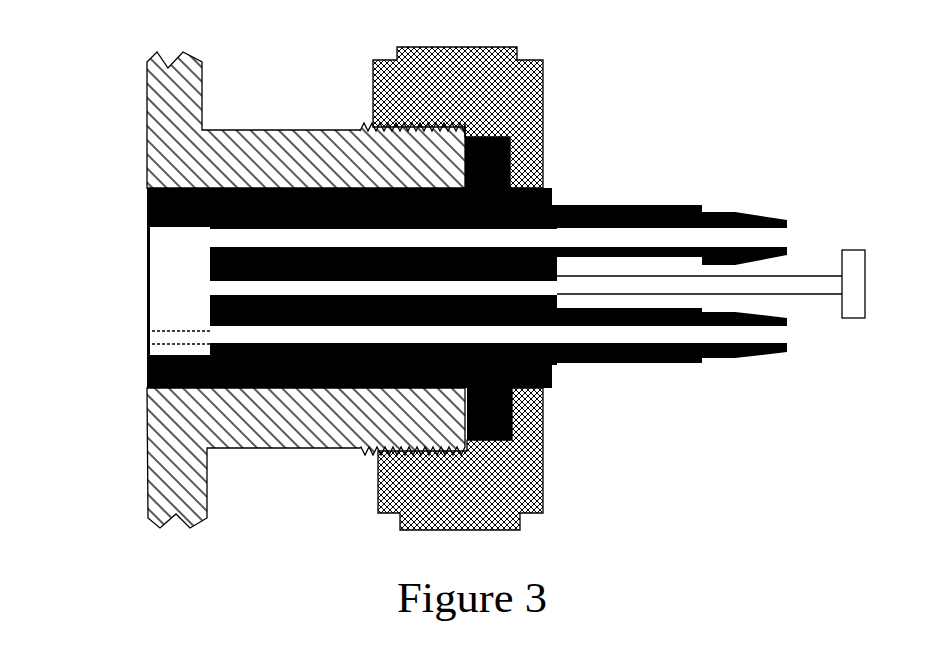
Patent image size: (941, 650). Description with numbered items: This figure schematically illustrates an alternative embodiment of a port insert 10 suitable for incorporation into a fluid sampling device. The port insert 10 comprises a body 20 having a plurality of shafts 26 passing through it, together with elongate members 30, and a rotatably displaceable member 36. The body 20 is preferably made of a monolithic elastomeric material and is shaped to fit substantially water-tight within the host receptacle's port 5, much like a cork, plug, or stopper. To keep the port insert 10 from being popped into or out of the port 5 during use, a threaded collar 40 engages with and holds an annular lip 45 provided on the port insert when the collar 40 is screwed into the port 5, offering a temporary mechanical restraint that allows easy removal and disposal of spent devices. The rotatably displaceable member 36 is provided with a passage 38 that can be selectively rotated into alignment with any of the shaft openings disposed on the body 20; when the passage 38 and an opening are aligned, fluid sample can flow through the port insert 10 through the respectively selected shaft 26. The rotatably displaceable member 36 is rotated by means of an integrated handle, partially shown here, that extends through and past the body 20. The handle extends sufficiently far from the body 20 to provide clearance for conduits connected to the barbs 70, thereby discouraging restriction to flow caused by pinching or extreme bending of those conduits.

The port insert 10 is at (650, 107).
The port 5 is at (315, 171).
The threaded collar 40 is at (476, 94).
The elongate member 30 is at (604, 413).
The rotatably displaceable member 36 is at (188, 291).
The passage 38 is at (152, 337).
The body 20 is at (148, 378).
The barb 70 is at (727, 210).
The shaft 26 is at (755, 235).
The annular lip 45 is at (541, 430).